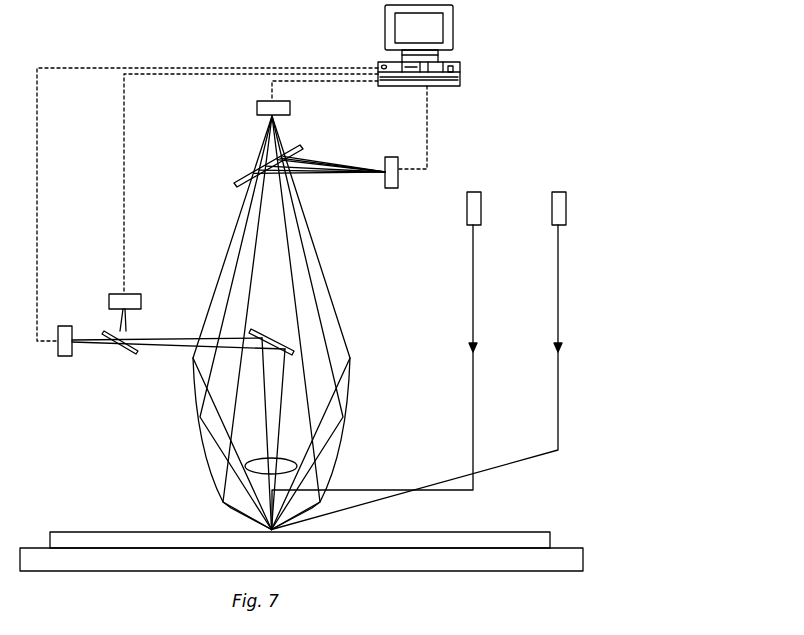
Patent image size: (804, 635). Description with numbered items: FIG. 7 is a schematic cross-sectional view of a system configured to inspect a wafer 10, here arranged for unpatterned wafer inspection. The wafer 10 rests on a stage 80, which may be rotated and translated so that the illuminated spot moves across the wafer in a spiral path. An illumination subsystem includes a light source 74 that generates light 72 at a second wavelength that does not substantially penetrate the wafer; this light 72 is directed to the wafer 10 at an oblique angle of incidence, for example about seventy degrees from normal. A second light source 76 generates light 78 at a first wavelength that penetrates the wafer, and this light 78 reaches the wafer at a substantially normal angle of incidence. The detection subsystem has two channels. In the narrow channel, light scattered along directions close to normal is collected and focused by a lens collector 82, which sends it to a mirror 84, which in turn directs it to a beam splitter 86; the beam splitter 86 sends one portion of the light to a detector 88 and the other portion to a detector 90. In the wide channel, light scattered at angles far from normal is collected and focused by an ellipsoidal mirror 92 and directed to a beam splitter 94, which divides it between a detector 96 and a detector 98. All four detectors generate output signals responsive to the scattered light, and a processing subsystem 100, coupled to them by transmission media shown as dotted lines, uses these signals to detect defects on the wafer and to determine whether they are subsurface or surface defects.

The wafer 10 is at (553, 531).
The light 72 is at (560, 308).
The light source 74 is at (568, 206).
The light source 76 is at (483, 206).
The light 78 is at (475, 308).
The stage 80 is at (585, 563).
The lens collector 82 is at (253, 462).
The mirror 84 is at (262, 331).
The beam splitter 86 is at (118, 352).
The detector 88 is at (58, 356).
The detector 90 is at (142, 298).
The ellipsoidal mirror 92 is at (338, 447).
The beam splitter 94 is at (235, 170).
The detector 96 is at (291, 108).
The detector 98 is at (384, 160).
The processing subsystem 100 is at (461, 73).